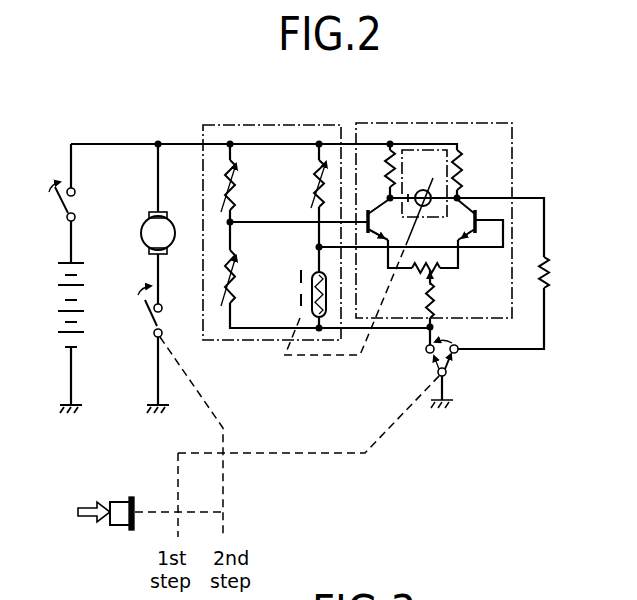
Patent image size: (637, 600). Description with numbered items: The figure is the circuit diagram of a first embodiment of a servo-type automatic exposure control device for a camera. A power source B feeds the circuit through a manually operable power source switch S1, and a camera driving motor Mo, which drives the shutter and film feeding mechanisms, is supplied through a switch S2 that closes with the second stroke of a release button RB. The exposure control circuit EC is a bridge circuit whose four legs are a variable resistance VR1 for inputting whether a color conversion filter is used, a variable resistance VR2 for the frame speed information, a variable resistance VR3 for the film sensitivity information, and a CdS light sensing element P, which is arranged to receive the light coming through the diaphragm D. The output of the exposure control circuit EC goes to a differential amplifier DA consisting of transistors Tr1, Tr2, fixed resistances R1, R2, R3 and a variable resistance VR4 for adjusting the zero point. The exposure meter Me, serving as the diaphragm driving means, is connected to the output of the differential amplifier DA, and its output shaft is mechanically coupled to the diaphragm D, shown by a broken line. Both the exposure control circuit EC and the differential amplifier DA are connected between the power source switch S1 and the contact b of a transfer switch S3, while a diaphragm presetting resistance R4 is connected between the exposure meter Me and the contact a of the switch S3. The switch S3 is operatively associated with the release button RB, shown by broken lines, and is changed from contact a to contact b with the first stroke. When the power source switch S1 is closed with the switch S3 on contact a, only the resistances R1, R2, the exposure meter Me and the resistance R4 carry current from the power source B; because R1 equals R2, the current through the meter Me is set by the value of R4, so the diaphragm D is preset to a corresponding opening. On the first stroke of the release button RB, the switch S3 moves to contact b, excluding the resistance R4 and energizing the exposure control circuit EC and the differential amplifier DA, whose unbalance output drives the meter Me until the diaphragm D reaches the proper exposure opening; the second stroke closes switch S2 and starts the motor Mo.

The power source switch S1 is at (56, 201).
The camera driving motor Mo is at (141, 233).
The power source B is at (60, 298).
The switch S2 is at (146, 318).
The release button RB is at (120, 502).
The exposure control circuit EC is at (252, 126).
The variable resistance VR1 is at (237, 178).
The variable resistance VR2 is at (237, 270).
The variable resistance VR3 is at (310, 193).
The diaphragm D is at (291, 292).
The light sensing element P is at (315, 275).
The differential amplifier DA is at (418, 122).
The resistance R1 is at (384, 164).
The resistance R2 is at (463, 164).
The resistance R3 is at (427, 303).
The diaphragm presetting resistance R4 is at (549, 272).
The exposure meter Me is at (424, 183).
The transistor Tr1 is at (377, 224).
The transistor Tr2 is at (468, 242).
The variable resistance VR4 is at (437, 273).
The transfer switch S3 is at (448, 372).
The contact a is at (452, 339).
The contact b is at (423, 339).